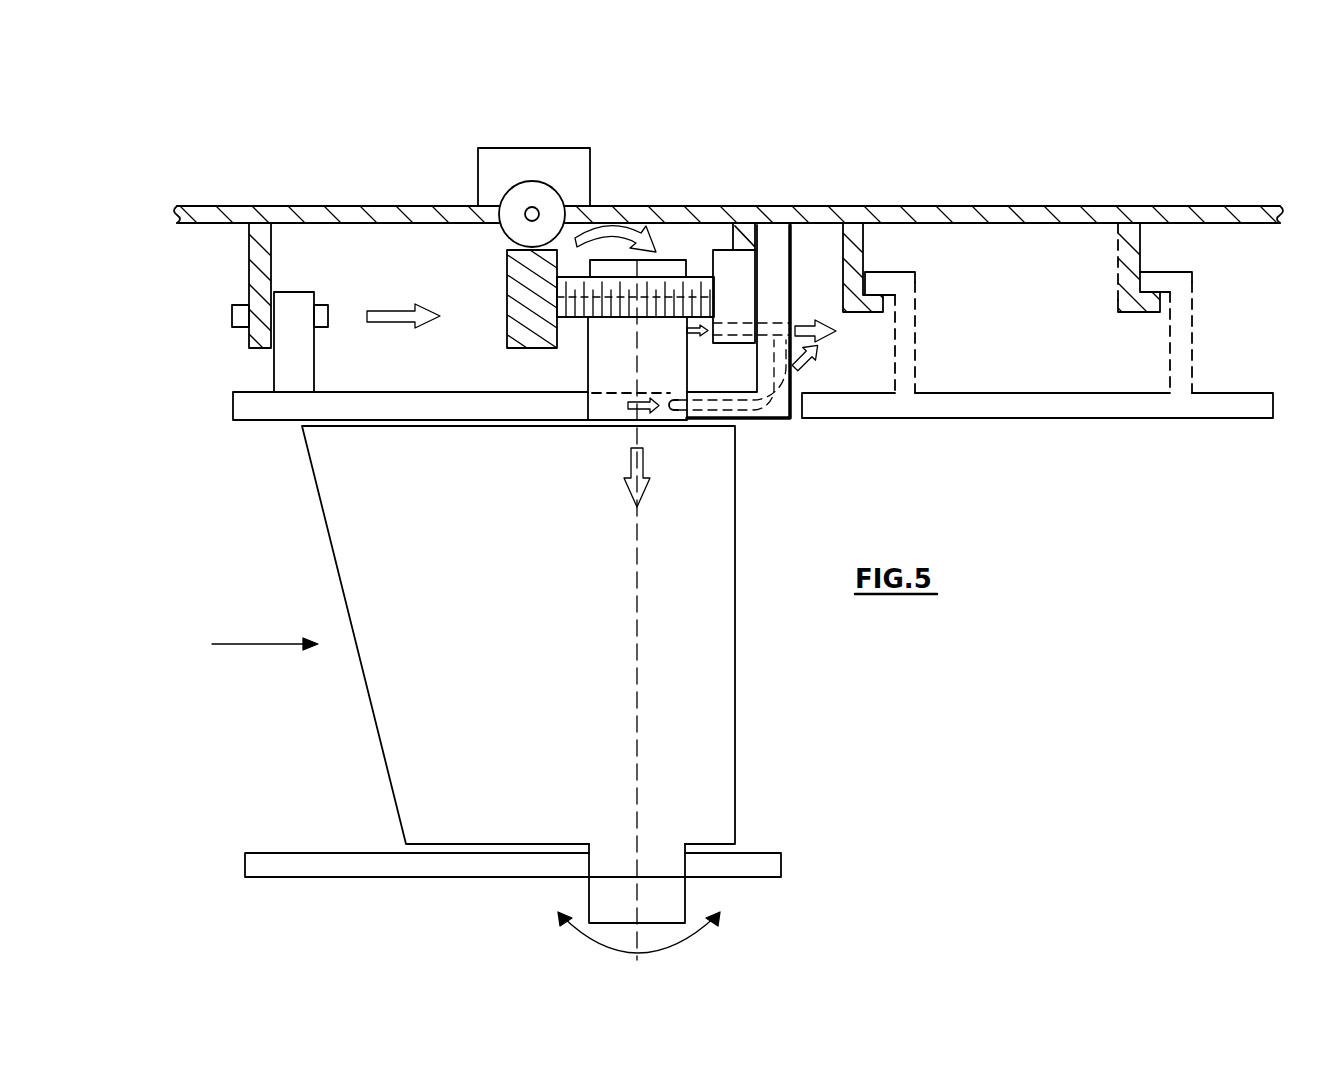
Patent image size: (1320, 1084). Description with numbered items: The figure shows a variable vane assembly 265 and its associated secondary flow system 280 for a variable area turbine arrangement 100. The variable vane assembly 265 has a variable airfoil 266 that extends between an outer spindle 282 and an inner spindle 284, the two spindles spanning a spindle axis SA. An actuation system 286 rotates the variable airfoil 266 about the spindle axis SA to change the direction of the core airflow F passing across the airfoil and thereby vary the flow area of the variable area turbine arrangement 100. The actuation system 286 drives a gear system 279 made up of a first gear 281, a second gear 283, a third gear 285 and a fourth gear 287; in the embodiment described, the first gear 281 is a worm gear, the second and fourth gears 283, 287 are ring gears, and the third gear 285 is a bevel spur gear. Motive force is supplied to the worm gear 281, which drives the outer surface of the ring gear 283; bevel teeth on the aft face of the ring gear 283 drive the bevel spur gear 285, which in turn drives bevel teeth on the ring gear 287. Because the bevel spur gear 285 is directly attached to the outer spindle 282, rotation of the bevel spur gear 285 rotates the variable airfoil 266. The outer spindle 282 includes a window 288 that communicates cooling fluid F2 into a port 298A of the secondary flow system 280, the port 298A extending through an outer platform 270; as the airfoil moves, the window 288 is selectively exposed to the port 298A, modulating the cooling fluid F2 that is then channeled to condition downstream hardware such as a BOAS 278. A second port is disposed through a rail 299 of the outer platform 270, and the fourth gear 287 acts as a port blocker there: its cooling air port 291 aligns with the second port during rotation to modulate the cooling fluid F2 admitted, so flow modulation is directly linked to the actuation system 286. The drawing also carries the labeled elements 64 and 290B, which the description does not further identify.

The frame plate 64 is at (1184, 198).
The variable area turbine arrangement 100 is at (753, 122).
The variable vane assembly 265 is at (244, 485).
The variable airfoil 266 is at (455, 552).
The outer platform 270 is at (325, 402).
The BOAS 278 is at (1045, 410).
The gear system 279 is at (504, 268).
The secondary flow system 280 is at (748, 422).
The first gear 281 is at (537, 190).
The outer spindle 282 is at (602, 357).
The second gear 283 is at (520, 315).
The inner spindle 284 is at (687, 893).
The third gear 285 is at (580, 298).
The actuation system 286 is at (506, 120).
The fourth gear 287 is at (743, 260).
The window 288 is at (680, 418).
The hanger bracket 290B is at (773, 327).
The cooling air port 291 is at (723, 332).
The port 298A is at (778, 402).
The rail 299 is at (778, 240).
The spindle axis SA is at (637, 625).
The core airflow F is at (262, 646).
The cooling fluid F2 is at (608, 228).